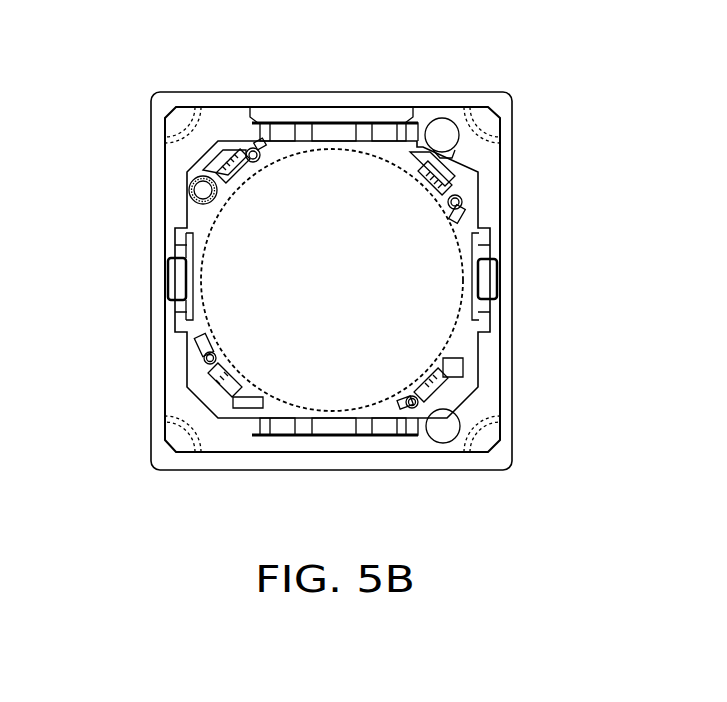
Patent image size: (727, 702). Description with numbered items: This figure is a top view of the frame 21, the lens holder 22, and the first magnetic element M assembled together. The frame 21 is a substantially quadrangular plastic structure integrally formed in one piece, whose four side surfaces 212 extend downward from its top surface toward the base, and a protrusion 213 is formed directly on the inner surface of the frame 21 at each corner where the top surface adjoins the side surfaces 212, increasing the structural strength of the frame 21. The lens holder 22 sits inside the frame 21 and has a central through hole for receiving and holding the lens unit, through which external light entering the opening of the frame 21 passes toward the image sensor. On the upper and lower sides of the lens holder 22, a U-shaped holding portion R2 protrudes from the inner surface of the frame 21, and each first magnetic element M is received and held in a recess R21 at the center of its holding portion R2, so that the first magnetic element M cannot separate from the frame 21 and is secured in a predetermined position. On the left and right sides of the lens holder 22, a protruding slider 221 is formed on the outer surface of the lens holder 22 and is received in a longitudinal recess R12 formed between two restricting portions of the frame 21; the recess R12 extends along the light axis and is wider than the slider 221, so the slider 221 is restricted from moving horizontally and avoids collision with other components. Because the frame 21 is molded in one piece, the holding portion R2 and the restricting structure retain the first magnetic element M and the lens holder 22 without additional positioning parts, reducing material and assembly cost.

The frame 21 is at (150, 90).
The side surface 212 is at (459, 107).
The protrusion 213 is at (178, 126).
The lens holder 22 is at (482, 362).
The holding portion R2 is at (238, 123).
The first magnetic element M is at (333, 120).
The recess R21 is at (411, 120).
The slider 221 is at (178, 279).
The longitudinal recess R12 is at (190, 290).